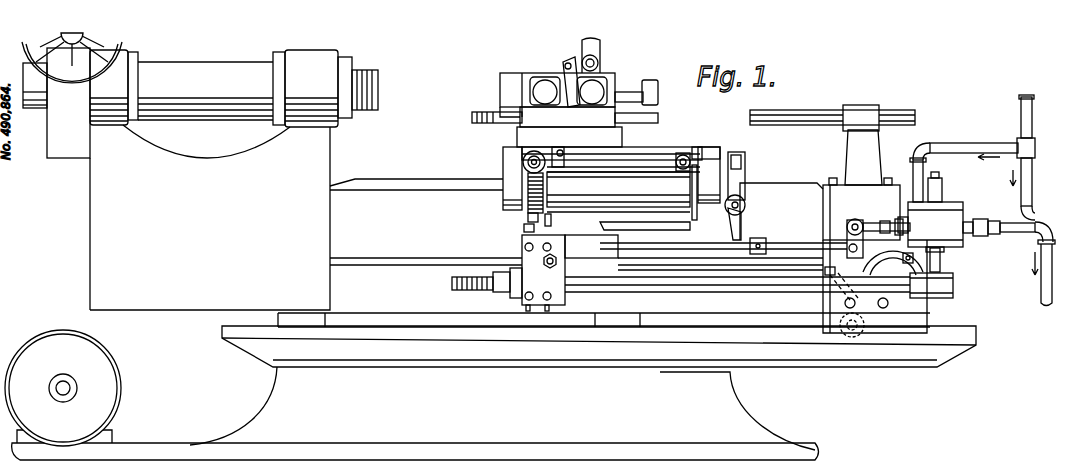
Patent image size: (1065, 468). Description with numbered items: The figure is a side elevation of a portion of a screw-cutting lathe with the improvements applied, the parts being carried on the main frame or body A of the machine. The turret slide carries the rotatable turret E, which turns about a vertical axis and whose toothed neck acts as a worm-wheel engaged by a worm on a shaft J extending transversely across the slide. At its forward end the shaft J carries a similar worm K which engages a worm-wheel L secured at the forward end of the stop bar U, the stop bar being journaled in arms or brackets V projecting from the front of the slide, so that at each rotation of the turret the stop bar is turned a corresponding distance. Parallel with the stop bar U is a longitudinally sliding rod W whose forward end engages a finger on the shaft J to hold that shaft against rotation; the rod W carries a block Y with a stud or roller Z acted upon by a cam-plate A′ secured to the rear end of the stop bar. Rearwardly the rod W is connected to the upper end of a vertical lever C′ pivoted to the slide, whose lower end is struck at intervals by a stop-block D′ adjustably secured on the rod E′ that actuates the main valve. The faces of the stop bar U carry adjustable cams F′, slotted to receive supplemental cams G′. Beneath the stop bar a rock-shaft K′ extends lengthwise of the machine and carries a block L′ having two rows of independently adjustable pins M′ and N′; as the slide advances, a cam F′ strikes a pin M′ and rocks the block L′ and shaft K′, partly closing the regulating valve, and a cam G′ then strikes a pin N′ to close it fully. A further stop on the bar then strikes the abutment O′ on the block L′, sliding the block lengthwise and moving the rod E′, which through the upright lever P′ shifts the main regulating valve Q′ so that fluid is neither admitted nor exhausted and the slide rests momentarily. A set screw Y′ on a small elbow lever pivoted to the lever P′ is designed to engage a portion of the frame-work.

The rotatable turret E is at (508, 76).
The shaft J is at (525, 158).
The worm K is at (527, 166).
The arms or brackets V is at (505, 201).
The worm-wheel L is at (530, 218).
The pins M′ is at (524, 229).
The pins N′ is at (541, 227).
The stop bar U is at (618, 192).
The cams or blocks F′ is at (618, 197).
The supplemental cams G′ is at (637, 200).
The sliding rod W is at (661, 157).
The block Y is at (690, 148).
The cam-plate A′ is at (701, 160).
The stud or roller Z is at (683, 171).
The vertical lever C′ is at (737, 183).
The stop-block D′ is at (757, 236).
The main valve shaft or rod E′ is at (788, 237).
The main regulating valve Q′ is at (896, 226).
The upright lever P′ is at (858, 244).
The abutment or lug O′ is at (591, 247).
The block L′ is at (529, 273).
The rock-shaft K′ is at (453, 284).
The main frame or body A is at (599, 321).
The set screw Y′ is at (830, 300).